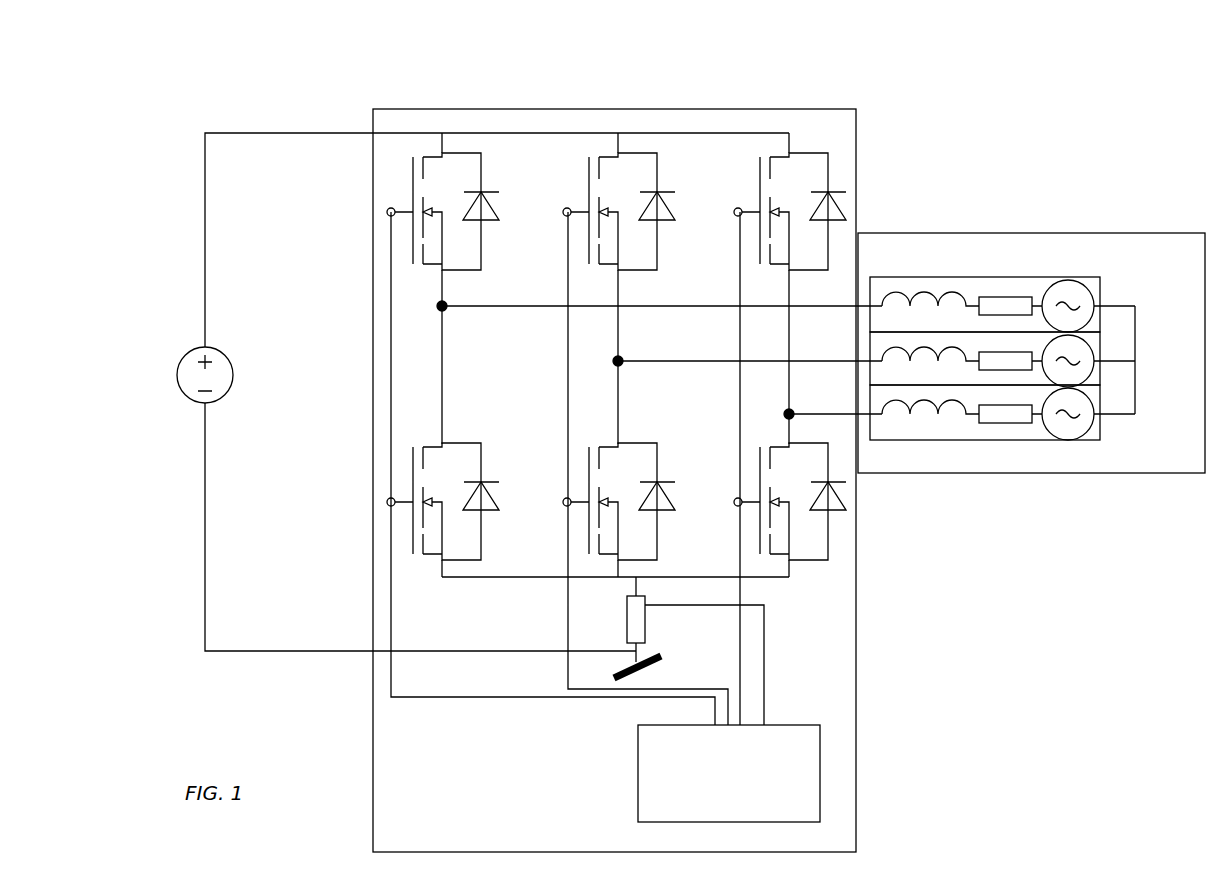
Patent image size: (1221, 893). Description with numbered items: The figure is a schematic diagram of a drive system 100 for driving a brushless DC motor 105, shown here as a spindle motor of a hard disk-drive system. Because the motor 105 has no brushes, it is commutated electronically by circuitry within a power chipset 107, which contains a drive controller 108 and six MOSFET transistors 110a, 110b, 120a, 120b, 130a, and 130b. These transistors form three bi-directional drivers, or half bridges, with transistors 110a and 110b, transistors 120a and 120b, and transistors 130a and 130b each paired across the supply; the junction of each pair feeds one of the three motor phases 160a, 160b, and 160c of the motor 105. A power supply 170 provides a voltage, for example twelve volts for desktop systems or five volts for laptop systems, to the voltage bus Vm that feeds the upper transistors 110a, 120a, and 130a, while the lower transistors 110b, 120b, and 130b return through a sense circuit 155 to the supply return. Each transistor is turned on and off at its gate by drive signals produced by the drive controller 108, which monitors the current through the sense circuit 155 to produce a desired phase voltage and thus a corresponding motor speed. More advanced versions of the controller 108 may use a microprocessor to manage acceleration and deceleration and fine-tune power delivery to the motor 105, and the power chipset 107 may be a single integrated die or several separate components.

The drive system 100 is at (979, 568).
The brushless DC motor 105 is at (1057, 233).
The power chipset 107 is at (855, 725).
The drive controller 108 is at (716, 803).
The MOSFET transistor 110a is at (467, 127).
The MOSFET transistor 110b is at (462, 427).
The MOSFET transistor 120a is at (643, 127).
The MOSFET transistor 120b is at (671, 450).
The MOSFET transistor 130a is at (832, 142).
The MOSFET transistor 130b is at (817, 577).
The sense circuit 155 is at (647, 620).
The motor phase 160a is at (1105, 317).
The motor phase 160b is at (1102, 375).
The motor phase 160c is at (1105, 435).
The power supply 170 is at (217, 412).